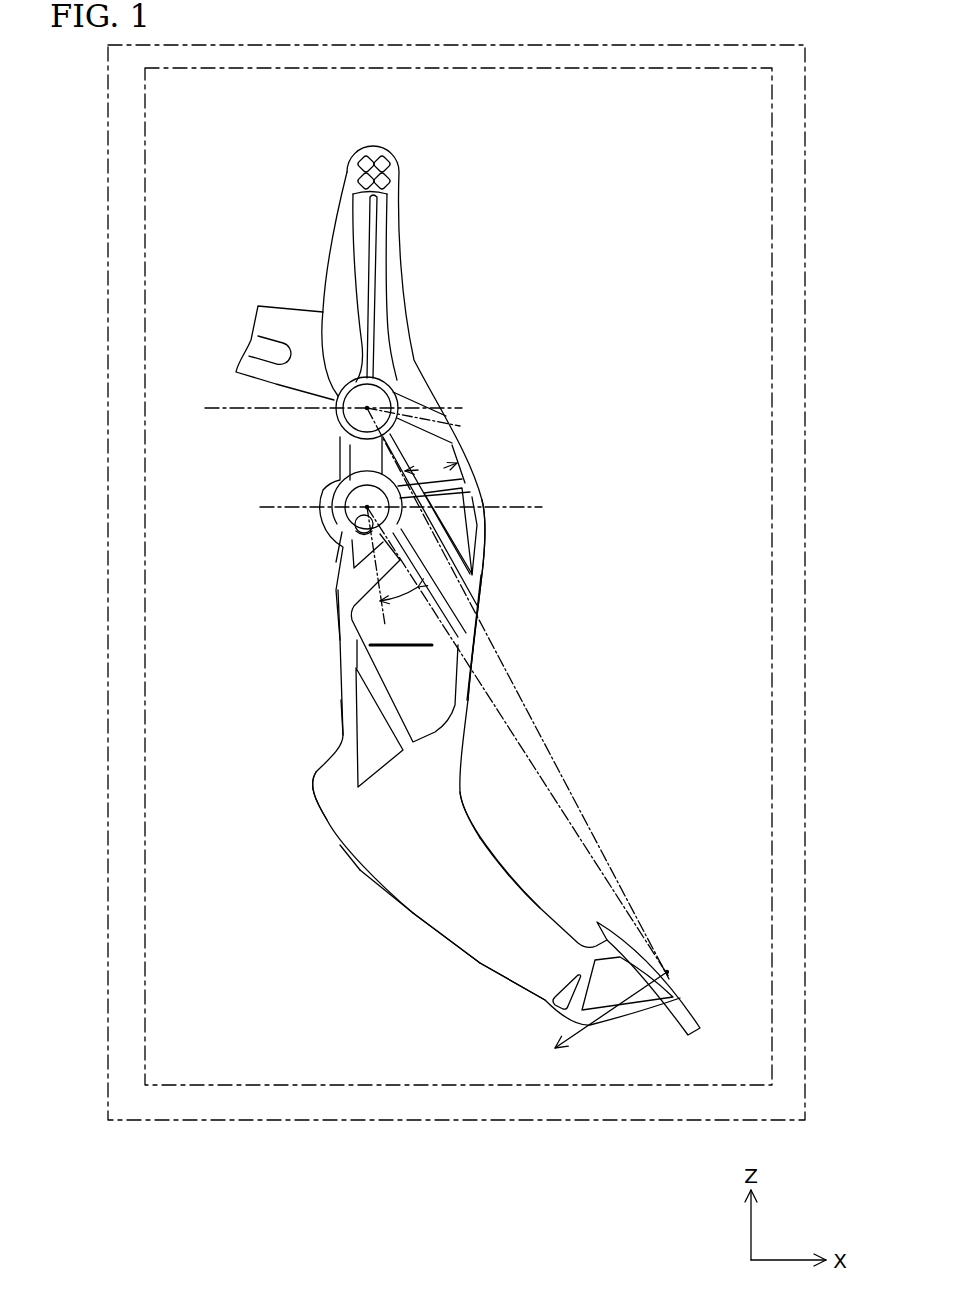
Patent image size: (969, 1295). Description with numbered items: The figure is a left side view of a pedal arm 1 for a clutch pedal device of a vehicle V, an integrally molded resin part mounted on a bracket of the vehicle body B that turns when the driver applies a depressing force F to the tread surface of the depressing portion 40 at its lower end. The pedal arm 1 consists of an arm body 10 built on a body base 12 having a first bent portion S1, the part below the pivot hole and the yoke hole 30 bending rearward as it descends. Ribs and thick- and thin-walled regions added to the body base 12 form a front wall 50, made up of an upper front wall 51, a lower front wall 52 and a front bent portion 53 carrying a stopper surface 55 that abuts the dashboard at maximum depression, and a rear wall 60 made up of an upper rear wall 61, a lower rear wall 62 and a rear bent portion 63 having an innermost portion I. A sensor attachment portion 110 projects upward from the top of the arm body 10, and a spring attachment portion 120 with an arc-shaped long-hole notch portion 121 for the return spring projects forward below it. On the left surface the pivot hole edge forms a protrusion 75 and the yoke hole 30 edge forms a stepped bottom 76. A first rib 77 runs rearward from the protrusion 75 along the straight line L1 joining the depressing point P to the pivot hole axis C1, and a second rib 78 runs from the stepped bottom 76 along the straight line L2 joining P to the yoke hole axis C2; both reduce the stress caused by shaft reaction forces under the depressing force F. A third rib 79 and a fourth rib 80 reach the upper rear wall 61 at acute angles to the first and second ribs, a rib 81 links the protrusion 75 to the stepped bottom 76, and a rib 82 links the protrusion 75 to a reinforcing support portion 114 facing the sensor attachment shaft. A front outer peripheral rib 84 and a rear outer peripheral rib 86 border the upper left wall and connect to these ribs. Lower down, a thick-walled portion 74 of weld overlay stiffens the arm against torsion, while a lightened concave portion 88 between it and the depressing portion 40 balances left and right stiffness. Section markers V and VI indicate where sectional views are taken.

The pedal arm 1 is at (528, 278).
The arm body 10 is at (492, 385).
The body base 12 is at (368, 632).
The yoke hole 30 is at (360, 527).
The depressing portion 40 is at (668, 950).
The front wall 50 is at (292, 717).
The upper front wall 51 is at (328, 614).
The lower front wall 52 is at (458, 962).
The front bent portion 53 is at (343, 880).
The stopper surface 55 is at (330, 821).
The rear wall 60 is at (574, 513).
The upper rear wall 61 is at (486, 494).
The lower rear wall 62 is at (496, 866).
The rear bent portion 63 is at (464, 805).
The thick-walled portion 74 is at (437, 905).
The protrusion 75 is at (346, 418).
The stepped bottom 76 is at (364, 540).
The first rib 77 is at (440, 534).
The second rib 78 is at (440, 607).
The third rib 79 is at (412, 396).
The fourth rib 80 is at (458, 472).
The rib 81 is at (360, 471).
The rib 82 is at (373, 333).
The front outer peripheral rib 84 is at (346, 694).
The rear outer peripheral rib 86 is at (484, 560).
The lightened concave portion 88 is at (576, 963).
The sensor attachment portion 110 is at (436, 146).
The reinforcing support portion 114 is at (394, 172).
The spring attachment portion 120 is at (270, 298).
The long-hole notch portion 121 is at (266, 342).
The central axis of the pivot hole C1 is at (369, 406).
The central axis of the yoke hole C2 is at (365, 508).
The straight line L1 is at (490, 646).
The straight line L2 is at (502, 722).
The depressing point P is at (670, 973).
The depressing force F is at (599, 1021).
The first bent portion S1 is at (288, 862).
The innermost portion I is at (472, 828).
The vehicle V is at (822, 168).
The section line VI is at (262, 504).
The vehicle body B is at (784, 320).